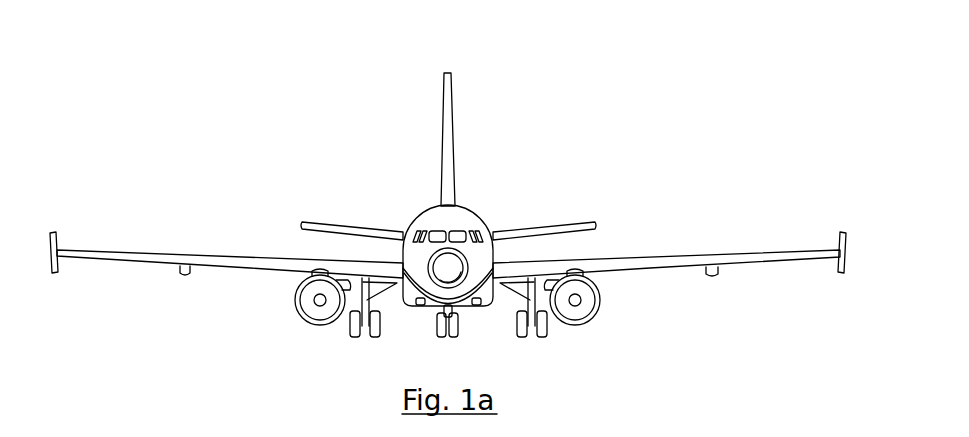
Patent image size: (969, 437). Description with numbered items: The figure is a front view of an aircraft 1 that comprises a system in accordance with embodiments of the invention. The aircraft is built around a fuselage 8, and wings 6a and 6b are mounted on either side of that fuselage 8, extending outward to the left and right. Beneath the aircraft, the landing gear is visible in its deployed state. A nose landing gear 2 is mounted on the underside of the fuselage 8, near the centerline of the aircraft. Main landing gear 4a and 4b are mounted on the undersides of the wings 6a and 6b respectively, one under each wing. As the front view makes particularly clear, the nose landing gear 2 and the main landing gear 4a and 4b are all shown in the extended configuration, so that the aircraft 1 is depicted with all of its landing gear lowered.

The aircraft 1 is at (566, 70).
The nose landing gear 2 is at (453, 318).
The main landing gear 4a is at (358, 312).
The main landing gear 4b is at (543, 323).
The wing 6a is at (226, 262).
The wing 6b is at (653, 265).
The fuselage 8 is at (432, 218).